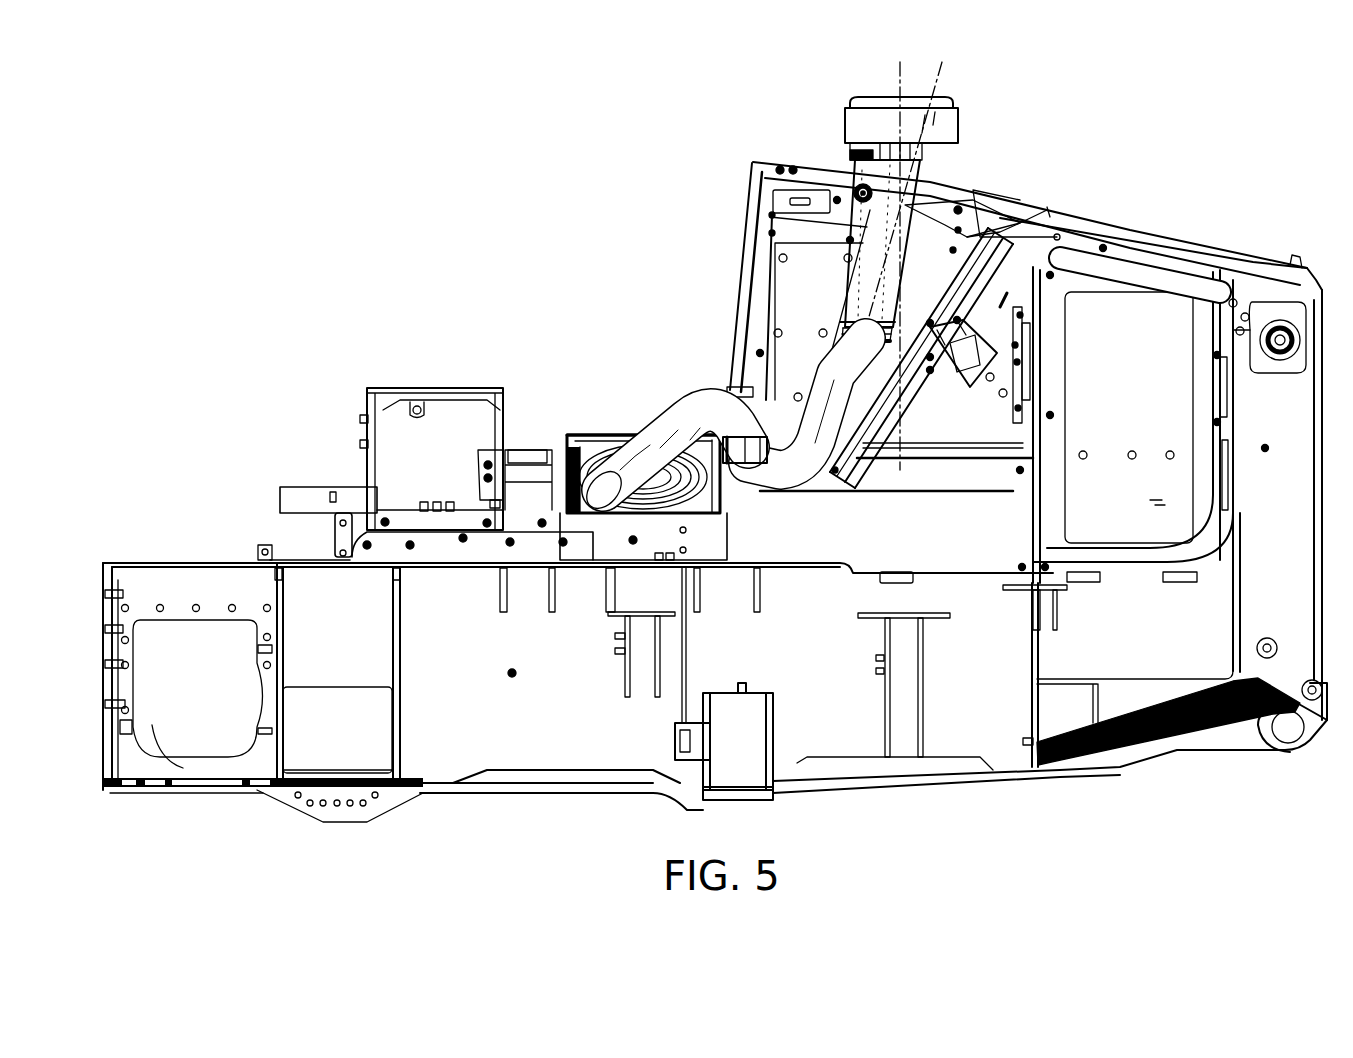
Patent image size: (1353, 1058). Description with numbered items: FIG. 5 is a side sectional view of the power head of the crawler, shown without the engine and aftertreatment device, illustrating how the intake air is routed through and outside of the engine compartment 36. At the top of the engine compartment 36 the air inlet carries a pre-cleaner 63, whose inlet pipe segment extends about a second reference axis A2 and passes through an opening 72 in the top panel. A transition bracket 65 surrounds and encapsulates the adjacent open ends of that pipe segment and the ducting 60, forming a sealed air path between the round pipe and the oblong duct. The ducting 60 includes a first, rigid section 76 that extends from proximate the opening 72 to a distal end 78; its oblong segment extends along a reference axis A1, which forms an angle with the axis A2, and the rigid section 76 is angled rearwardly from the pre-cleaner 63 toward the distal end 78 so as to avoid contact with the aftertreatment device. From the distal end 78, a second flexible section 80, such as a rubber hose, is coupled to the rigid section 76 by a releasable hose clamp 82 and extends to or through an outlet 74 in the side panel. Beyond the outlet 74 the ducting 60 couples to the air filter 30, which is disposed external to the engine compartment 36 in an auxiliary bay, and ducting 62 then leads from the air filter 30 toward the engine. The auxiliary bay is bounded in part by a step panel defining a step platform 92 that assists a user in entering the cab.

The reference axis A1 is at (941, 68).
The second reference axis A2 is at (898, 72).
The air filter 30 is at (587, 435).
The engine compartment 36 is at (937, 282).
The ducting 60 is at (829, 362).
The ducting 62 is at (665, 447).
The pre-cleaner 63 is at (966, 121).
The transition bracket 65 is at (924, 200).
The opening 72 is at (790, 360).
The outlet 74 is at (748, 435).
The rigid section 76 is at (878, 238).
The distal end 78 is at (880, 237).
The flexible section 80 is at (930, 332).
The hose clamp 82 is at (852, 324).
The step platform 92 is at (603, 433).